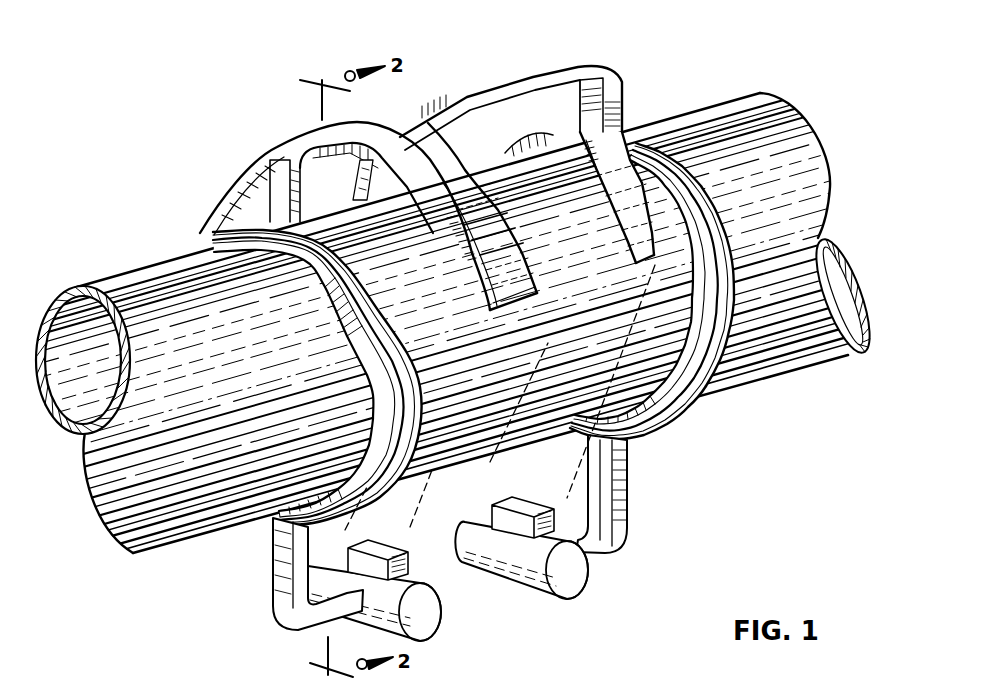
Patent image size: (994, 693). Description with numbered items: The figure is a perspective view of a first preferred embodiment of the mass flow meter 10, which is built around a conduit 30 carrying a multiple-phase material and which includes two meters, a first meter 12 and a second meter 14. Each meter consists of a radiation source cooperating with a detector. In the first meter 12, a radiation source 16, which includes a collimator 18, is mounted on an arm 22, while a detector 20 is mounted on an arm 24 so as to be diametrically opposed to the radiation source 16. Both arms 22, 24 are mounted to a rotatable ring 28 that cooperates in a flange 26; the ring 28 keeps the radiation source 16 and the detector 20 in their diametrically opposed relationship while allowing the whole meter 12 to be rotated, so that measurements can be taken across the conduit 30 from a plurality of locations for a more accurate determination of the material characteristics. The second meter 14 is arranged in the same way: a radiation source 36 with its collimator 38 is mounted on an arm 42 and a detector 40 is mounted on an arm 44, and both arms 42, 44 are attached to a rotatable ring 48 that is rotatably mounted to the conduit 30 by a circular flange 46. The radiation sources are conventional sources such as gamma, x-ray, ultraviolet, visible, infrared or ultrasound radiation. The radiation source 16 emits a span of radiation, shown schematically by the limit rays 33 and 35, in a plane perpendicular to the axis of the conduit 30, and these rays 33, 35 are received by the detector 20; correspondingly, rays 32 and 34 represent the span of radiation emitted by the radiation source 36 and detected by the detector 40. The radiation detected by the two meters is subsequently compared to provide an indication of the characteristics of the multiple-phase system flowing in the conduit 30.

The mass flow meter 10 is at (441, 337).
The meter 12 is at (529, 145).
The meter 14 is at (368, 191).
The radiation source 16 is at (565, 592).
The collimator 18 is at (492, 509).
The detector 20 is at (545, 123).
The arm 22 is at (628, 474).
The arm 24 is at (612, 74).
The flange 26 is at (672, 418).
The rotatable ring 28 is at (663, 300).
The conduit 30 is at (810, 158).
The ray 32 is at (350, 530).
The ray 33 is at (492, 472).
The ray 34 is at (418, 525).
The ray 35 is at (555, 483).
The radiation source 36 is at (394, 617).
The collimator 38 is at (410, 584).
The detector 40 is at (277, 147).
The arm 42 is at (276, 600).
The arm 44 is at (316, 160).
The circular flange 46 is at (213, 241).
The rotatable ring 48 is at (288, 361).